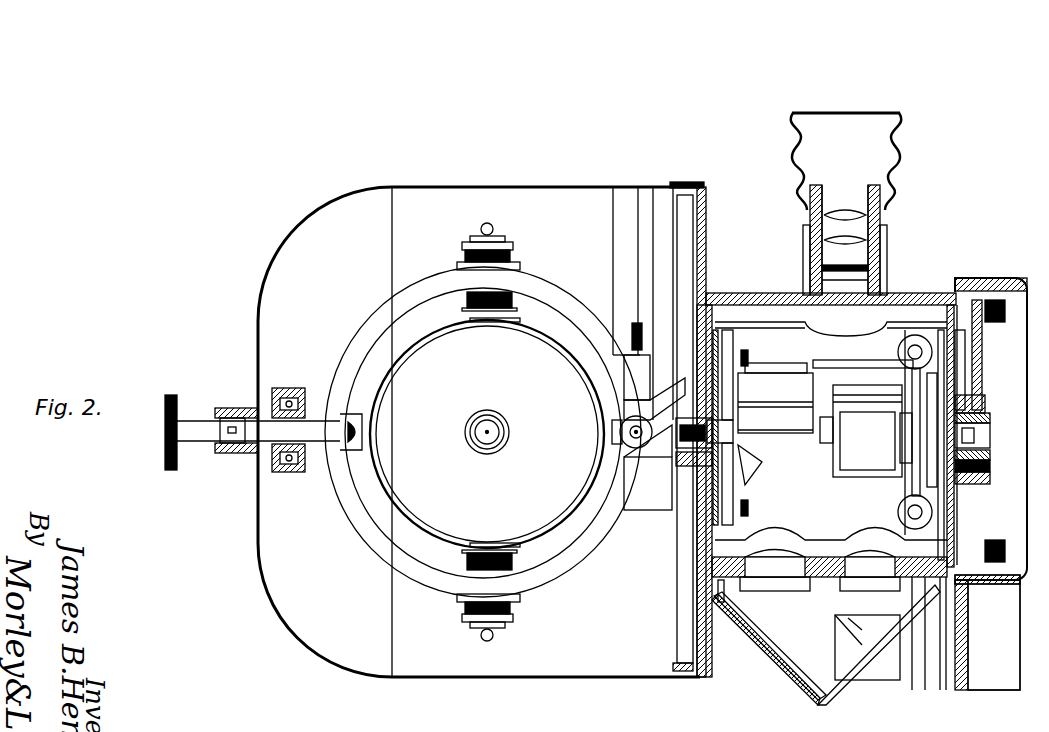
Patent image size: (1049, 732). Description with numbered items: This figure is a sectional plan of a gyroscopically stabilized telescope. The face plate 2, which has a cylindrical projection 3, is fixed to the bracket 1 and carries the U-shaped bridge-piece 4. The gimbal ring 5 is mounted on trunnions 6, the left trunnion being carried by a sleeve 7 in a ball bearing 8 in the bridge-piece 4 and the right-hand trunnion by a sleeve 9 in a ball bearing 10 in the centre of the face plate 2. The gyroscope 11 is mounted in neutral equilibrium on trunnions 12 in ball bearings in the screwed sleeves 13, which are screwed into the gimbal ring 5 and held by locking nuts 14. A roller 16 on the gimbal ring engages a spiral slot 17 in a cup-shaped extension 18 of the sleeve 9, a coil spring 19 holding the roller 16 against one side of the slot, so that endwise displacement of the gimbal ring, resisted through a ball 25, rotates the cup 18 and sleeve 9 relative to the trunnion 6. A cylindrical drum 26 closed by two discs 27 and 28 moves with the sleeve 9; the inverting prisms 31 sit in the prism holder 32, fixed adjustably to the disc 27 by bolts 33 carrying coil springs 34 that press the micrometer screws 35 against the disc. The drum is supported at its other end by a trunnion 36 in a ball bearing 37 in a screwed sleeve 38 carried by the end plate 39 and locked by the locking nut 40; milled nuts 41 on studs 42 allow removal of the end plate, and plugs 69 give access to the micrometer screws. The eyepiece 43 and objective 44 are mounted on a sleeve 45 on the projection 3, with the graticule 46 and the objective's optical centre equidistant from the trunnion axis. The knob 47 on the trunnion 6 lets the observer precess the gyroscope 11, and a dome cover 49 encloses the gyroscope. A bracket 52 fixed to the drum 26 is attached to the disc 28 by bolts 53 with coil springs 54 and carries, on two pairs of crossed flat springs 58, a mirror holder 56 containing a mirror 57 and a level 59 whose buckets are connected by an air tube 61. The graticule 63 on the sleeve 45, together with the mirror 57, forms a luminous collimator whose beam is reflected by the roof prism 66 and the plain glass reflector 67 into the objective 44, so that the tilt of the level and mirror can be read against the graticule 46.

The bracket 1 is at (980, 690).
The face plate 2 is at (706, 192).
The cylindrical projection 3 is at (787, 300).
The U-shaped bridge-piece 4 is at (417, 398).
The gimbal ring 5 is at (343, 384).
The trunnions 6 is at (352, 421).
The sleeve 7 is at (275, 410).
The ball bearing 8 is at (250, 400).
The sleeve 9 is at (716, 380).
The ball bearing 10 is at (722, 335).
The gyroscope 11 is at (338, 366).
The trunnions 12 is at (477, 303).
The screwed sleeves 13 is at (467, 290).
The locking nuts 14 is at (463, 258).
The roller 16 is at (621, 254).
The spiral slot 17 is at (658, 288).
The cup-shaped extension 18 is at (635, 510).
The coil spring 19 is at (638, 247).
The ball 25 is at (348, 440).
The cylindrical drum 26 is at (766, 322).
The disc 27 is at (718, 602).
The disc 28 is at (940, 639).
The inverting prisms 31 is at (867, 407).
The prism holder 32 is at (785, 385).
The bolts 33 is at (694, 470).
The coil springs 34 is at (668, 492).
The micrometer screws 35 is at (742, 348).
The trunnion 36 is at (985, 435).
The ball bearing 37 is at (990, 412).
The screwed sleeve 38 is at (990, 462).
The end plate 39 is at (1005, 320).
The locking nut 40 is at (990, 480).
The milled nuts 41 is at (1000, 584).
The studs 42 is at (985, 590).
The eyepiece 43 is at (845, 200).
The objective 44 is at (770, 598).
The sleeve 45 is at (880, 377).
The graticule 46 is at (806, 232).
The knob 47 is at (165, 448).
The dome cover 49 is at (280, 285).
The bracket 52 is at (873, 437).
The bolts 53 is at (985, 395).
The coil springs 54 is at (978, 380).
The mirror holder 56 is at (935, 380).
The mirror 57 is at (945, 400).
The crossed flat springs 58 is at (905, 395).
The level 59 is at (925, 340).
The air tube 61 is at (913, 639).
The graticule 63 is at (875, 600).
The roof prism 66 is at (800, 665).
The plain glass reflector 67 is at (768, 640).
The plugs 69 is at (985, 355).